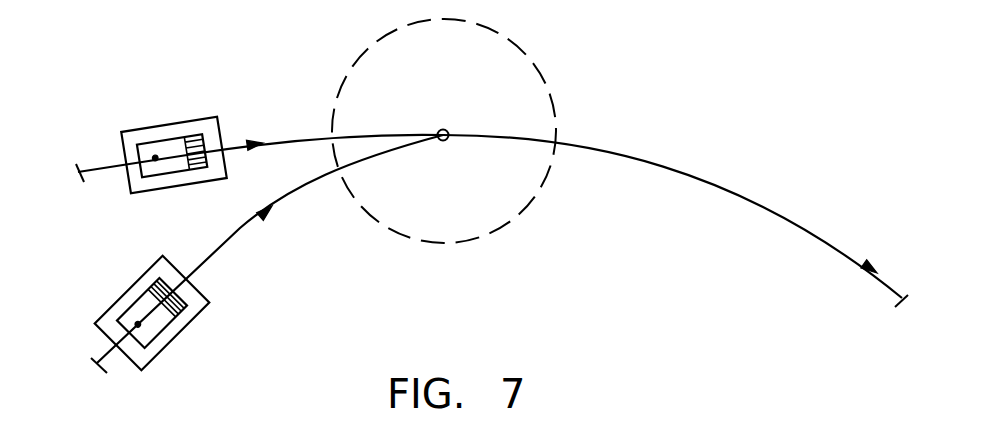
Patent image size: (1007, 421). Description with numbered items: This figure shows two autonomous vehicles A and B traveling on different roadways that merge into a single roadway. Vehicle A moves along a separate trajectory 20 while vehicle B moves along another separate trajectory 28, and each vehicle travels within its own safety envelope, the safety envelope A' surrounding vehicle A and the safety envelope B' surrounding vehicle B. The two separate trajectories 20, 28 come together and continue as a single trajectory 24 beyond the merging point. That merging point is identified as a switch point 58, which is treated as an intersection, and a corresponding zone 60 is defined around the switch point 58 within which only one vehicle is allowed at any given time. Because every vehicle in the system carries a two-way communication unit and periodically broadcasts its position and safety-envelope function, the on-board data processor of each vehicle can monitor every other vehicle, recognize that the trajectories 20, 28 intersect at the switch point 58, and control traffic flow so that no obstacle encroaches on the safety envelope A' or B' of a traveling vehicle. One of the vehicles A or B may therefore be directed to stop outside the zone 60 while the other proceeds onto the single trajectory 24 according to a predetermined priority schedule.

The trajectory 20 is at (283, 142).
The single trajectory 24 is at (743, 188).
The trajectory 28 is at (298, 190).
The switch point 58 is at (448, 130).
The zone 60 is at (563, 118).
The vehicle A is at (168, 117).
The safety envelope A' is at (191, 111).
The vehicle B is at (162, 339).
The safety envelope B' is at (176, 313).